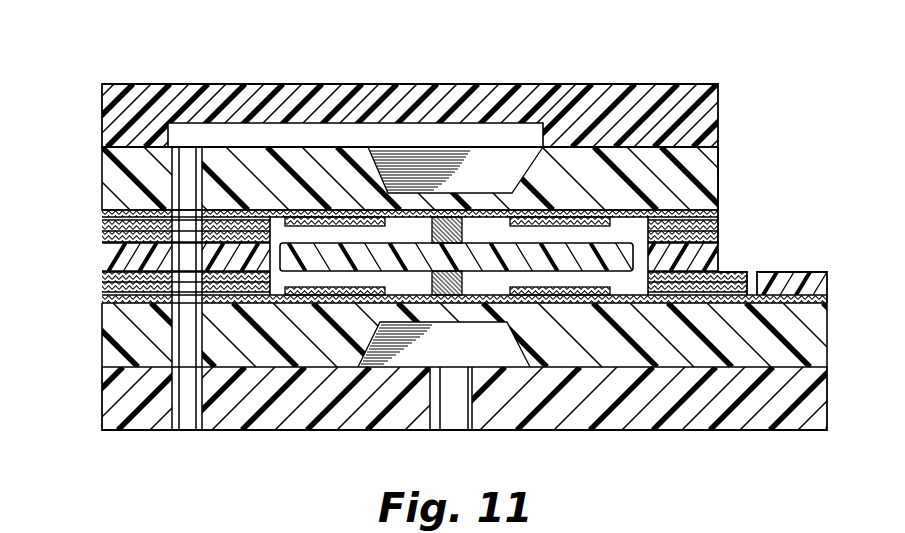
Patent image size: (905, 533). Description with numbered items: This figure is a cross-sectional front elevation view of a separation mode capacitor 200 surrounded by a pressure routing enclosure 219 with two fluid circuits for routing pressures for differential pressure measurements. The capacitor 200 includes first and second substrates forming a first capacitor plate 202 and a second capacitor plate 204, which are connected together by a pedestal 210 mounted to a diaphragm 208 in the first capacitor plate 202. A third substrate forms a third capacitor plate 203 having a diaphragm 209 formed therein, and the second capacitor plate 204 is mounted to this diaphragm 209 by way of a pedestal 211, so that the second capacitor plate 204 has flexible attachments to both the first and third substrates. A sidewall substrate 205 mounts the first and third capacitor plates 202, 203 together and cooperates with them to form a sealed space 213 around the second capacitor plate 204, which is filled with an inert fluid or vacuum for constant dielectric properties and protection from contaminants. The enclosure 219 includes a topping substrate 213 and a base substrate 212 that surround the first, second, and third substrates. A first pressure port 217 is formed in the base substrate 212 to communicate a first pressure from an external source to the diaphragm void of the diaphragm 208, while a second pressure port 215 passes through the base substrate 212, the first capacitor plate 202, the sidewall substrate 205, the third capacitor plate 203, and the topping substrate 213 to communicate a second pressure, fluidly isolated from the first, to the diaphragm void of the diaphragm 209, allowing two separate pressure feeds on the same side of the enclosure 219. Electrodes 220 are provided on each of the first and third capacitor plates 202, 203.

The capacitor 200 is at (115, 44).
The pressure routing enclosure 219 is at (193, 80).
The topping substrate 213 is at (320, 93).
The third capacitor plate 203 is at (105, 182).
The diaphragm 209 is at (480, 212).
The sidewall substrate 205 is at (105, 257).
The second capacitor plate 204 is at (548, 258).
The pedestal 211 is at (422, 218).
The pedestal 210 is at (432, 295).
The electrodes 220 is at (596, 224).
The diaphragm 208 is at (478, 312).
The first capacitor plate 202 is at (112, 322).
The base substrate 212 is at (110, 403).
The second pressure port 215 is at (188, 414).
The first pressure port 217 is at (454, 412).